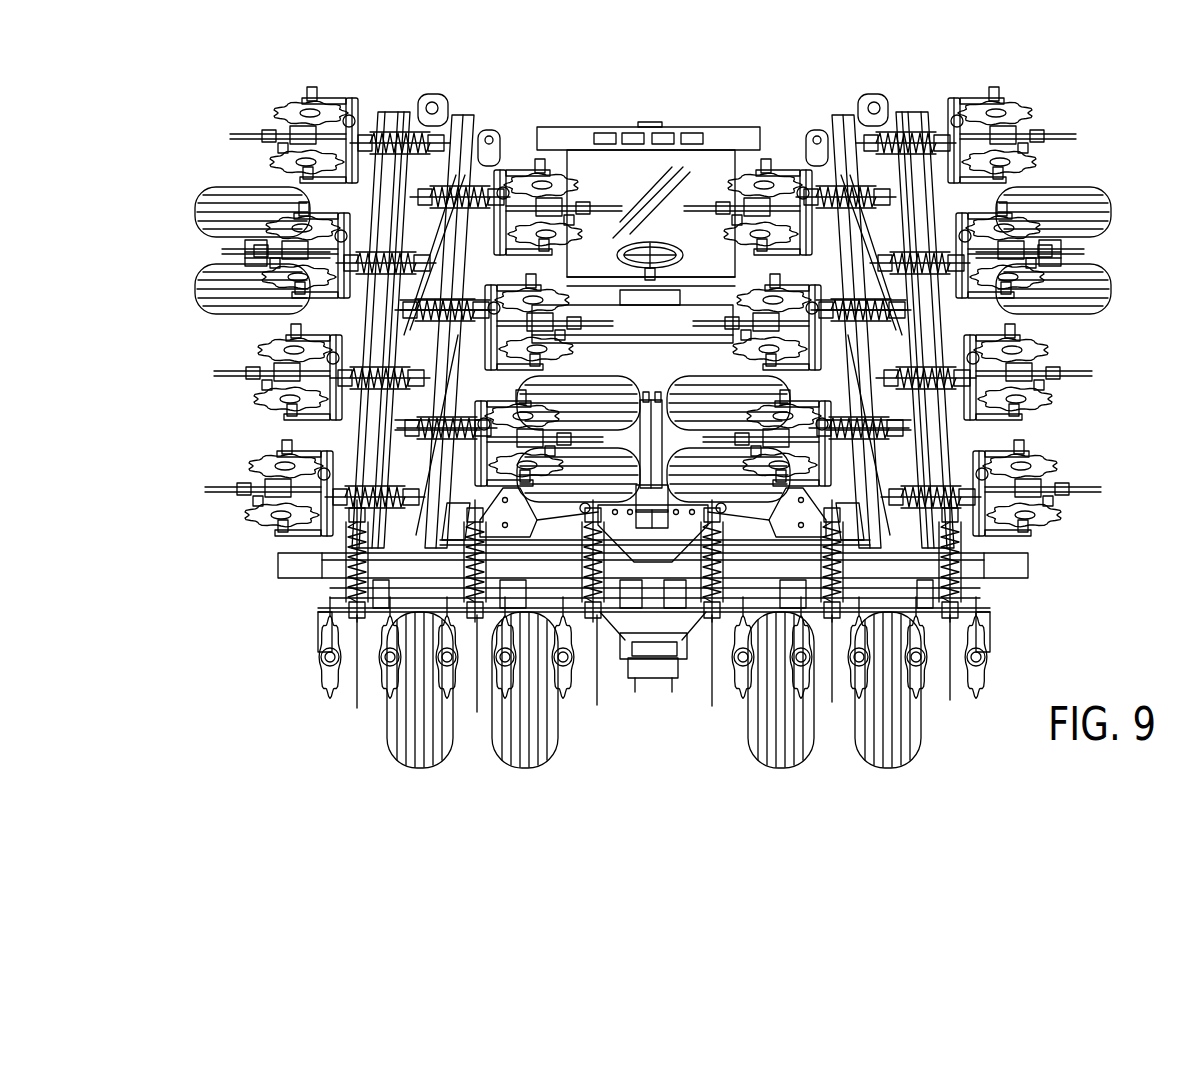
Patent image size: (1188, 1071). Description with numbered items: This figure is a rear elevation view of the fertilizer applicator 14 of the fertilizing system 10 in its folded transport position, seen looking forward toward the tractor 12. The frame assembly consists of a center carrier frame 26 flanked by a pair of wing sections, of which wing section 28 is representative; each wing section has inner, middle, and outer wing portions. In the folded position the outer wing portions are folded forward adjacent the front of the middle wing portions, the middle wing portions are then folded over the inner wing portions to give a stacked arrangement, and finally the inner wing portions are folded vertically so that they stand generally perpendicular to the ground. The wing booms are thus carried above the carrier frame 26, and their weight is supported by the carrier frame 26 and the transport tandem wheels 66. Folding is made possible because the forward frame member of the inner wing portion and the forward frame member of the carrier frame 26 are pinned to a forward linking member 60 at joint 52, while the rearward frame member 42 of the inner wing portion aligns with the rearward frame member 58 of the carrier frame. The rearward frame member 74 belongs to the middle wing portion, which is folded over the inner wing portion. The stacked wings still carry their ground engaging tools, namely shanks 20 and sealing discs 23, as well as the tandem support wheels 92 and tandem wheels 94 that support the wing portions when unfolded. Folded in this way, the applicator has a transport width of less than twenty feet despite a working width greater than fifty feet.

The fertilizing system 10 is at (228, 63).
The tractor 12 is at (720, 136).
The fertilizer applicator 14 is at (262, 574).
The shanks 20 is at (272, 130).
The sealing discs 23 is at (565, 165).
The carrier frame 26 is at (290, 572).
The wing section 28 is at (498, 152).
The rearward frame member 42 is at (388, 326).
The joint 52 is at (1000, 588).
The rearward frame member 58 is at (916, 690).
The forward linking member 60 is at (438, 115).
The tandem wheels 66 is at (476, 757).
The rearward frame member 74 is at (468, 122).
The tandem support wheels 92 is at (702, 376).
The tandem wheels 94 is at (196, 246).